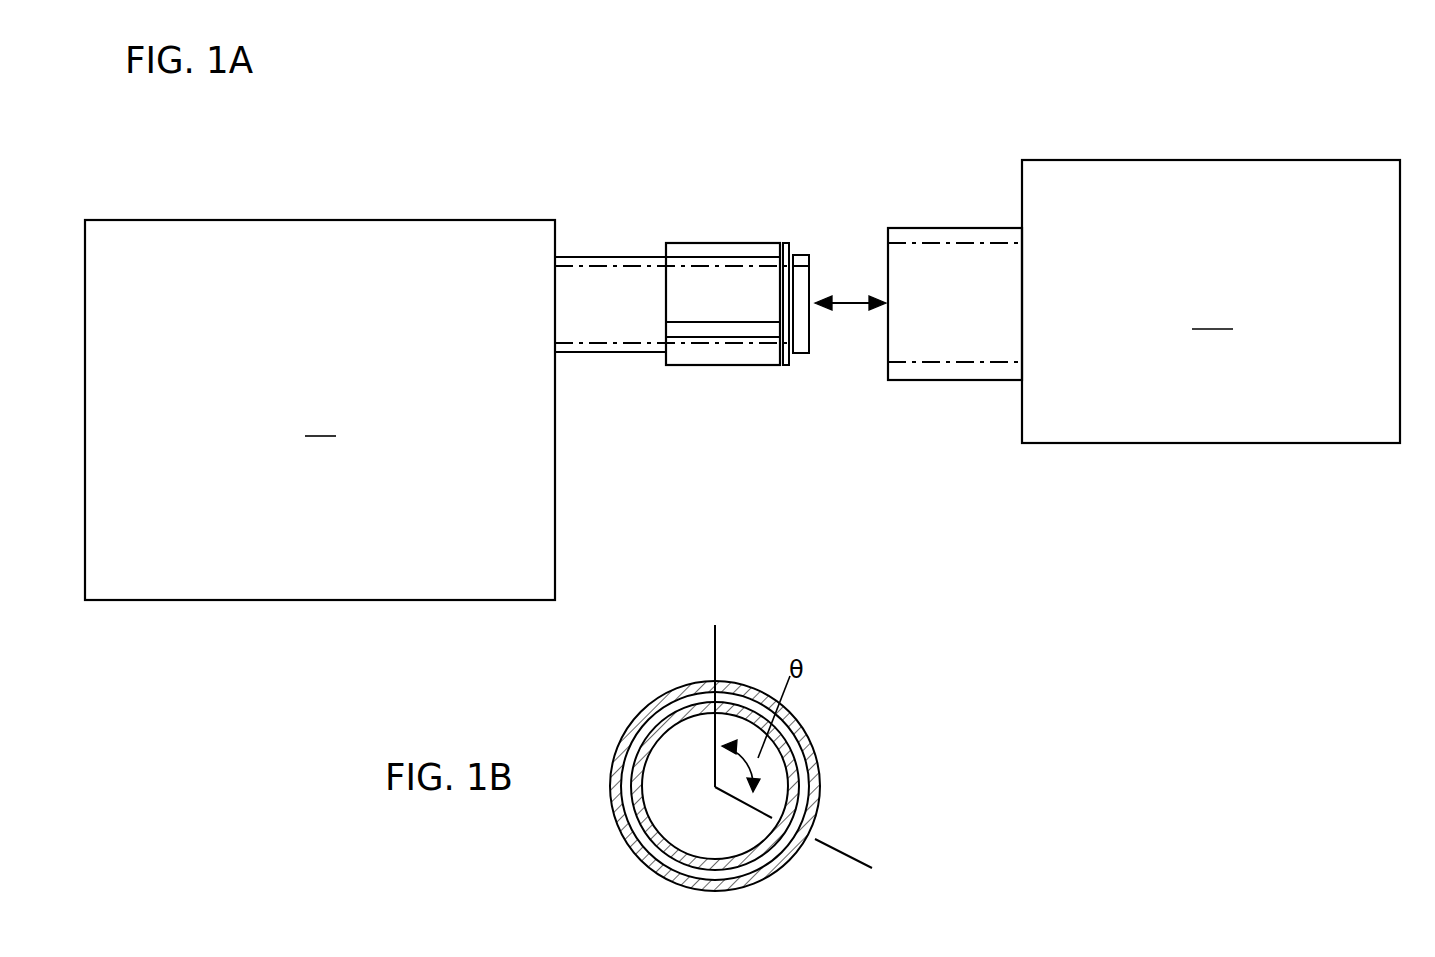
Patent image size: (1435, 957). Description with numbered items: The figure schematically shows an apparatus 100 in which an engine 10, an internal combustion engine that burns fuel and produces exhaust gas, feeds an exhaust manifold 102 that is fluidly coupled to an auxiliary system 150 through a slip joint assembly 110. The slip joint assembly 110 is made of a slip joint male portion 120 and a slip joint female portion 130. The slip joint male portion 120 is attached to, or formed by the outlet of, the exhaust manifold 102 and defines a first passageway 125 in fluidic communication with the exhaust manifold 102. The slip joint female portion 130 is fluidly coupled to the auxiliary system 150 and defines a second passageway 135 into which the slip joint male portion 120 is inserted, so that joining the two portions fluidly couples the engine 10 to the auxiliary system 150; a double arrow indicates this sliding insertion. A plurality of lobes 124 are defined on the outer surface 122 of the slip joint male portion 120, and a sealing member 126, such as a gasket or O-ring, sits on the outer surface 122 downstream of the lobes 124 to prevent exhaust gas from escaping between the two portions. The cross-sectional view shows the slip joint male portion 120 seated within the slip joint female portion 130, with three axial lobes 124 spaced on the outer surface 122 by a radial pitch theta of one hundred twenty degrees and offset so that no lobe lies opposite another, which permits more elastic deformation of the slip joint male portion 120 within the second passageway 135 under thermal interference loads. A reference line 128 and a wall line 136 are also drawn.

In FIG. 1A, the engine 10 is at (320, 410).
In FIG. 1A, the apparatus 100 is at (683, 114).
In FIG. 1A, the exhaust manifold 102 is at (612, 297).
In FIG. 1A, the slip joint assembly 110 is at (861, 159).
In FIG. 1A, the slip joint male portion 120 is at (690, 243).
In FIG. 1B, the slip joint male portion 120 is at (722, 887).
In FIG. 1A, the outer surface 122 is at (750, 262).
In FIG. 1B, the outer surface 122 is at (770, 874).
In FIG. 1A, the lobes 124 is at (723, 332).
In FIG. 1B, the lobes 124 is at (797, 838).
In FIG. 1A, the first passageway 125 is at (687, 343).
In FIG. 1B, the first passageway 125 is at (672, 812).
In FIG. 1A, the sealing member 126 is at (793, 363).
In FIG. 1B, the reference axis 128 is at (800, 770).
In FIG. 1A, the slip joint female portion 130 is at (952, 228).
In FIG. 1B, the slip joint female portion 130 is at (800, 748).
In FIG. 1A, the second passageway 135 is at (920, 352).
In FIG. 1A, the housing wall 136 is at (970, 362).
In FIG. 1B, the housing wall 136 is at (805, 727).
In FIG. 1A, the auxiliary system 150 is at (1211, 301).